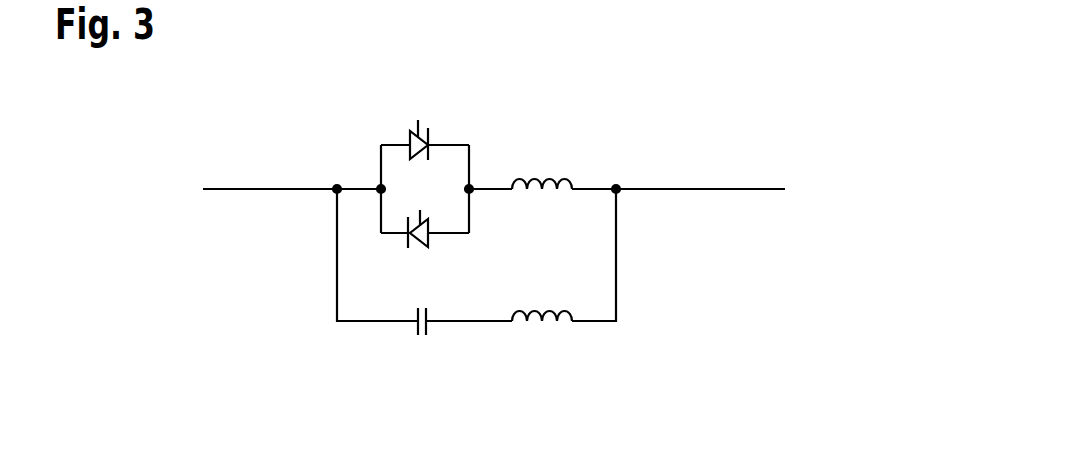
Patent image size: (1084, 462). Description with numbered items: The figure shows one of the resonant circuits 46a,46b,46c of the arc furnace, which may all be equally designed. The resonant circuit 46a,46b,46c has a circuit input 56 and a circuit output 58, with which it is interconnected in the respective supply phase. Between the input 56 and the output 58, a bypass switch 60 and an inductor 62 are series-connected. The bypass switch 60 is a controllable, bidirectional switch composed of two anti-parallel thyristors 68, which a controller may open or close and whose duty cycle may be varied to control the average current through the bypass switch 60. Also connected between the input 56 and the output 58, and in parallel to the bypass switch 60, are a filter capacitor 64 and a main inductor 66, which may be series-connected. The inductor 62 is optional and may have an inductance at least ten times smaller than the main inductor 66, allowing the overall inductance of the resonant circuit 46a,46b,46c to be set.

The resonant circuit 46a,46b,46c is at (748, 113).
The circuit input 56 is at (242, 189).
The circuit output 58 is at (703, 189).
The bypass switch 60 is at (410, 123).
The thyristor 68 is at (430, 135).
The inductor 62 is at (563, 178).
The capacitor 64 is at (432, 333).
The main inductor 66 is at (563, 311).